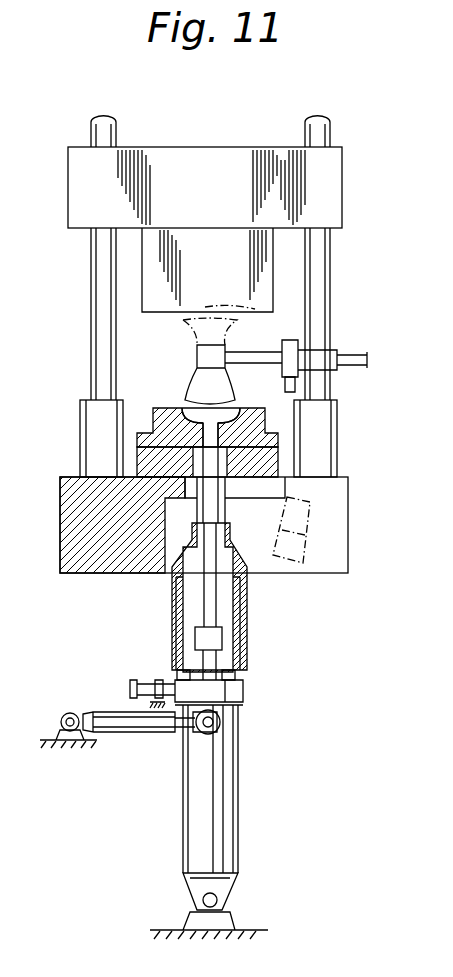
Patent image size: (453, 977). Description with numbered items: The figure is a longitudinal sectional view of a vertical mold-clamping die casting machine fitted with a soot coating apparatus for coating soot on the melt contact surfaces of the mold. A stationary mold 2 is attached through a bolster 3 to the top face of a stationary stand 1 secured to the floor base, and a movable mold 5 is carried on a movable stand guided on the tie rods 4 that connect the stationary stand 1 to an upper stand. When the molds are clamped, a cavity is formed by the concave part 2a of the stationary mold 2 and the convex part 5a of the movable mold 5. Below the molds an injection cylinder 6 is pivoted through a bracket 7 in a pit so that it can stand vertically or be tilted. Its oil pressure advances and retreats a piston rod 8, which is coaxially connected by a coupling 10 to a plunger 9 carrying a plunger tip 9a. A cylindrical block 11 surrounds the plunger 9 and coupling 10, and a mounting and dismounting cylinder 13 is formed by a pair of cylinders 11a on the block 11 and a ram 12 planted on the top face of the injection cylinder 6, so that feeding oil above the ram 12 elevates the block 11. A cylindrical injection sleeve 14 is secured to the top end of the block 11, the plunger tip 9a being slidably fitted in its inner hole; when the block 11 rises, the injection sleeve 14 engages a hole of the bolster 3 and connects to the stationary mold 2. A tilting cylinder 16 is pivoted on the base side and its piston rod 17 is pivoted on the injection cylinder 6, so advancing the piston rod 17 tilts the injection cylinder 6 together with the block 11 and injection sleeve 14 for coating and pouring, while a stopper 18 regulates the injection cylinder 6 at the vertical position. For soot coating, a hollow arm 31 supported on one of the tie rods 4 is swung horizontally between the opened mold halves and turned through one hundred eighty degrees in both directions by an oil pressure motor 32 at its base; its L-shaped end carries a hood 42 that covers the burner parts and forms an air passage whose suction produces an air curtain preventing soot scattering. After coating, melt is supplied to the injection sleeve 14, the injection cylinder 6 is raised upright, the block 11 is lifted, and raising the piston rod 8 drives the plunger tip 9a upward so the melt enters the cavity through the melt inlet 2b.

The stationary stand 1 is at (348, 500).
The stationary mold 2 is at (210, 407).
The concave part 2a is at (183, 408).
The melt inlet 2b is at (218, 432).
The bolster 3 is at (278, 460).
The tie rods 4 is at (330, 288).
The movable mold 5 is at (273, 262).
The convex part 5a is at (178, 322).
The injection cylinder 6 is at (238, 757).
The bracket 7 is at (233, 915).
The piston rod 8 is at (215, 663).
The plunger 9 is at (207, 593).
The plunger tip 9a is at (220, 522).
The coupling 10 is at (217, 640).
The cylindrical block 11 is at (160, 652).
The cylinders 11a is at (178, 588).
The ram 12 is at (168, 622).
The mounting and dismounting cylinder 13 is at (187, 570).
The injection sleeve 14 is at (197, 515).
The tilting cylinder 16 is at (118, 725).
The piston rod 17 is at (187, 732).
The stopper 18 is at (143, 702).
The hollow arm 31 is at (261, 350).
The oil pressure motor 32 is at (295, 390).
The hood 42 is at (227, 378).